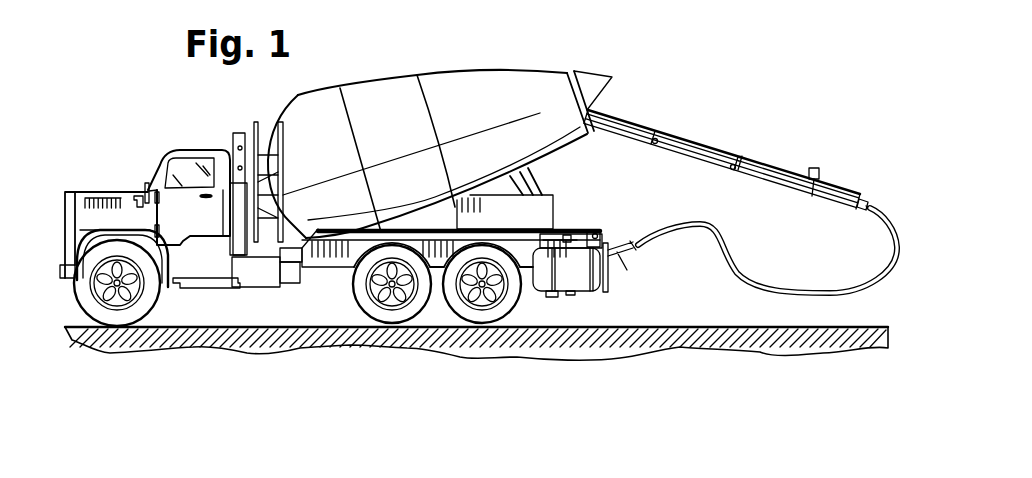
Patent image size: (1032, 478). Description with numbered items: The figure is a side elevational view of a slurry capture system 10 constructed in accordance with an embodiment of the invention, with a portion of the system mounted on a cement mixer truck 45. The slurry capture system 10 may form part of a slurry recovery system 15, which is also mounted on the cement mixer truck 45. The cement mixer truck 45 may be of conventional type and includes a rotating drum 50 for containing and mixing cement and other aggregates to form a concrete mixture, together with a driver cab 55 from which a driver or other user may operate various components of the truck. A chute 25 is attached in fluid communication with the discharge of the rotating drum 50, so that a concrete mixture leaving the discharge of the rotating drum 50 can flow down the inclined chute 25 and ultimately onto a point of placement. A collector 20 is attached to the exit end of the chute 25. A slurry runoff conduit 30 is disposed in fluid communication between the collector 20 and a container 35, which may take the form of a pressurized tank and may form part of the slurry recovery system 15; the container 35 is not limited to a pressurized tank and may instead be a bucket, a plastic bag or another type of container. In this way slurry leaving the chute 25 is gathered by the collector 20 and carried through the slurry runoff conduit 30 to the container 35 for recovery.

The slurry capture system 10 is at (868, 192).
The slurry recovery system 15 is at (553, 300).
The collector 20 is at (838, 180).
The chute 25 is at (637, 116).
The slurry runoff conduit 30 is at (787, 289).
The container 35 is at (598, 289).
The cement mixer truck 45 is at (158, 167).
The rotating drum 50 is at (312, 97).
The driver cab 55 is at (199, 148).